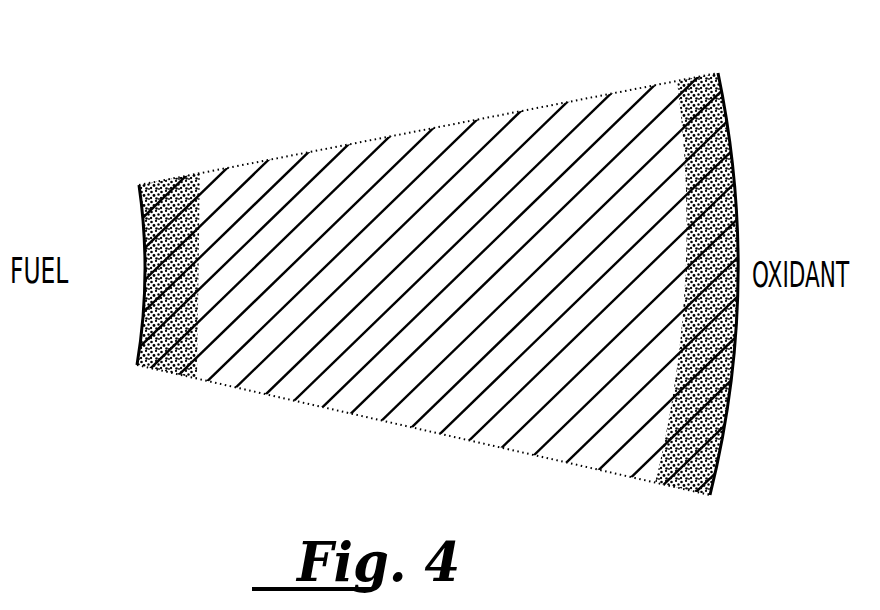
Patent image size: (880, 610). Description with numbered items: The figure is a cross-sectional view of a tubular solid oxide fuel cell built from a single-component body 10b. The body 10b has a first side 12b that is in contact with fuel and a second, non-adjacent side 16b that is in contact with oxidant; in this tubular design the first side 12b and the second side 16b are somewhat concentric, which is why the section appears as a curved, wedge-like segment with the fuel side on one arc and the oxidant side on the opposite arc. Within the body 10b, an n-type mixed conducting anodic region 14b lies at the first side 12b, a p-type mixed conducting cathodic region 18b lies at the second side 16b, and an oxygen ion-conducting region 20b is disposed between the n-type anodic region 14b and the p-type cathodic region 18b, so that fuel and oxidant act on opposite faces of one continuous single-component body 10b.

The single-component body 10b is at (440, 251).
The first side 12b is at (147, 312).
The n-type mixed conducting anodic region 14b is at (170, 183).
The second side 16b is at (733, 170).
The p-type mixed conducting cathodic region 18b is at (700, 110).
The oxygen ion-conducting region 20b is at (438, 160).